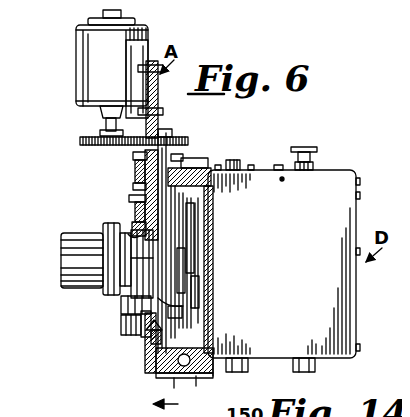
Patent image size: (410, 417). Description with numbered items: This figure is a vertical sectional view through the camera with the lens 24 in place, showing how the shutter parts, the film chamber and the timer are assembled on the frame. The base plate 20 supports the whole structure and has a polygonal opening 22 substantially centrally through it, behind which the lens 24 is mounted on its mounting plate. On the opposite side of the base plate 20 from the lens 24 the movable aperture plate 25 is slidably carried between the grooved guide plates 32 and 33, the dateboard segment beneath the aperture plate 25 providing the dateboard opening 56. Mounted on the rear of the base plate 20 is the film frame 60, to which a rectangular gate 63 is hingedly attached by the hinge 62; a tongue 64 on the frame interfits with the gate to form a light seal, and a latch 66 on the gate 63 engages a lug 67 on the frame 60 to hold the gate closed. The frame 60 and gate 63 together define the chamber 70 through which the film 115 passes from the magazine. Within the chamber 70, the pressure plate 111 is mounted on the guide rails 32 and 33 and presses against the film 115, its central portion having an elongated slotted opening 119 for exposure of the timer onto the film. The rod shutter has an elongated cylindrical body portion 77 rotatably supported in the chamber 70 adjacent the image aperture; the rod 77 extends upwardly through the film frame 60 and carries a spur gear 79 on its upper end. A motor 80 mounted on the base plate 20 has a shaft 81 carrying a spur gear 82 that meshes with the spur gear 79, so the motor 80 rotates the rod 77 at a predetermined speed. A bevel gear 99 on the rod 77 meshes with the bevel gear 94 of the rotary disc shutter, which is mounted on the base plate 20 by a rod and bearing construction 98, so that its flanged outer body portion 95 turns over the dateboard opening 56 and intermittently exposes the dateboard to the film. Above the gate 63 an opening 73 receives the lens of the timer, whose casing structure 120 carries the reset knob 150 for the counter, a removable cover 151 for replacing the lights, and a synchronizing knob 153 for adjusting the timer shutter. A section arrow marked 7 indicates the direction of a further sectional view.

The motor 80 is at (85, 37).
The shaft 81 is at (98, 118).
The spur gear 82 is at (80, 139).
The spur gear 79 is at (171, 124).
The elongated cylindrical body portion 77 is at (148, 160).
The polygonal opening 22 is at (124, 222).
The latch 66 is at (180, 152).
The lug 67 is at (172, 146).
The grooved guide plate 32 is at (203, 184).
The opening 73 is at (190, 225).
The aperture plate 25 is at (173, 240).
The rectangular gate 63 is at (168, 252).
The film 115 is at (168, 264).
The elongated slotted opening 119 is at (180, 274).
The dateboard opening 56 is at (171, 294).
The pressure plate 111 is at (188, 302).
The grooved guide plate 33 is at (168, 318).
The bevel gear 99 is at (152, 322).
The lens 24 is at (72, 246).
The bevel gear 94 is at (118, 300).
The rod and bearing construction 98 is at (112, 316).
The flanged outer body portion 95 is at (146, 344).
The base plate 20 is at (140, 368).
The film frame 60 is at (150, 382).
The section line 7 is at (155, 407).
The hinge 62 is at (167, 382).
The tongue 64 is at (190, 378).
The chamber 70 is at (205, 362).
The casing structure 120 is at (334, 204).
The synchronizing knob 153 is at (226, 152).
The removable cover 151 is at (270, 157).
The reset knob 150 is at (302, 150).